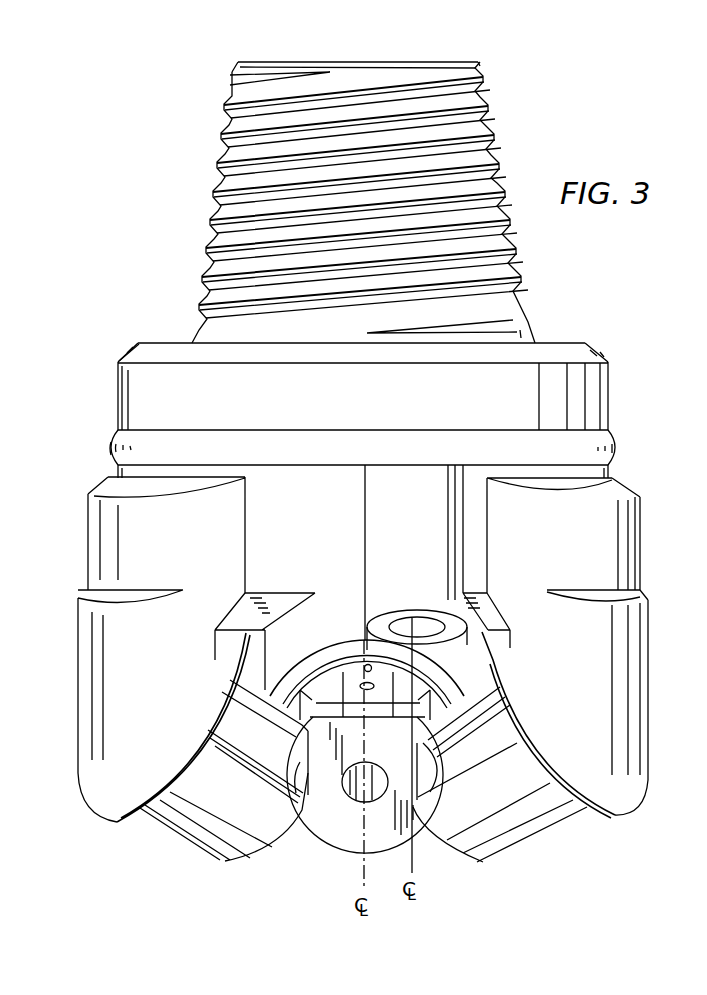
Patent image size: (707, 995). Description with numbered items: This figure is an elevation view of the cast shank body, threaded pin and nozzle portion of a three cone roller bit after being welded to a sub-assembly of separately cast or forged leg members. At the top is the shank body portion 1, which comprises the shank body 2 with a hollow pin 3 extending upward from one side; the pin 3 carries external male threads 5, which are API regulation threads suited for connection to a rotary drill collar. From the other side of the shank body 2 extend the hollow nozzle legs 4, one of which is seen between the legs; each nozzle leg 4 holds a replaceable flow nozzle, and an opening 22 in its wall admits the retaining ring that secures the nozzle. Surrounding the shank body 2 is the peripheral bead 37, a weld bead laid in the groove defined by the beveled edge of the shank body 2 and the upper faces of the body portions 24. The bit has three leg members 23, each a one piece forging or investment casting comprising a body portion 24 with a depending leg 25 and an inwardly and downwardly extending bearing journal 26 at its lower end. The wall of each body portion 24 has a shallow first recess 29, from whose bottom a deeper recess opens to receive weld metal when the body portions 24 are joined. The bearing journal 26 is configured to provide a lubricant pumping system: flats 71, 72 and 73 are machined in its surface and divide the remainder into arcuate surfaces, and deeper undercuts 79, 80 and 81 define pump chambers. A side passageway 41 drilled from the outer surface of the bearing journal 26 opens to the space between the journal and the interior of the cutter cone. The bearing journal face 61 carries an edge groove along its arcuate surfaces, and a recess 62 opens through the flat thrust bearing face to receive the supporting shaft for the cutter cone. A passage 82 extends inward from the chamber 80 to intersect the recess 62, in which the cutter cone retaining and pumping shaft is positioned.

The shank body portion 1 is at (148, 328).
The shank body 2 is at (124, 403).
The hollow pin 3 is at (262, 64).
The hollow nozzle leg 4 is at (410, 548).
The external male threads 5 is at (228, 106).
The opening 22 is at (438, 606).
The leg member 23 is at (657, 528).
The body portion 24 is at (100, 540).
The depending leg 25 is at (92, 675).
The bearing journal 26 is at (192, 826).
The first recess 29 is at (127, 354).
The peripheral bead 37 is at (614, 443).
The side passageway 41 is at (367, 680).
The bearing journal face 61 is at (322, 830).
The recess 62 is at (366, 796).
The flat 71 is at (300, 763).
The flat 72 is at (364, 716).
The flat 73 is at (426, 782).
The deeper undercut 79 is at (226, 720).
The deeper undercut 80 is at (356, 667).
The deeper undercut 81 is at (478, 758).
The passage 82 is at (362, 684).